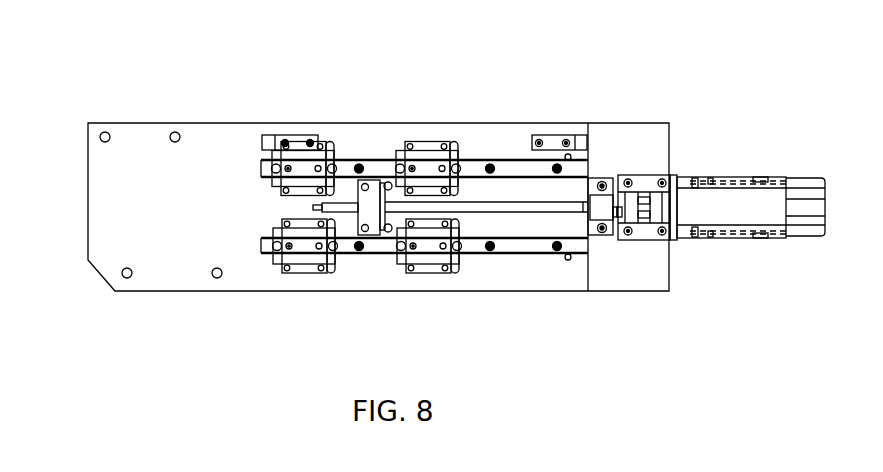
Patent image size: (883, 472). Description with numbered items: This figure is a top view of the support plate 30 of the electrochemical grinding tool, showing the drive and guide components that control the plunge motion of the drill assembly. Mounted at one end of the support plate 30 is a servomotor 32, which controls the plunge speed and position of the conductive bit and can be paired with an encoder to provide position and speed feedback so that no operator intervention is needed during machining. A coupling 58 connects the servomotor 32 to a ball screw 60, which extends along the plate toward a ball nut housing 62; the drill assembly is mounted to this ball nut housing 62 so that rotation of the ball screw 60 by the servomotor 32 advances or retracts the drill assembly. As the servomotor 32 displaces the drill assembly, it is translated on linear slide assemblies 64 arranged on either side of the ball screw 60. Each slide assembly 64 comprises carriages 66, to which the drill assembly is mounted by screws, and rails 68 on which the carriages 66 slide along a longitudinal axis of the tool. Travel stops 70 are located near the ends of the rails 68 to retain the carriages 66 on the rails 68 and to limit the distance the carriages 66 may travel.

The support plate 30 is at (143, 140).
The servomotor 32 is at (748, 208).
The coupling 58 is at (652, 185).
The ball screw 60 is at (497, 205).
The ball nut housing 62 is at (366, 207).
The linear slide assemblies 64 is at (385, 140).
The carriages 66 is at (308, 150).
The rails 68 is at (575, 170).
The travel stops 70 is at (270, 140).